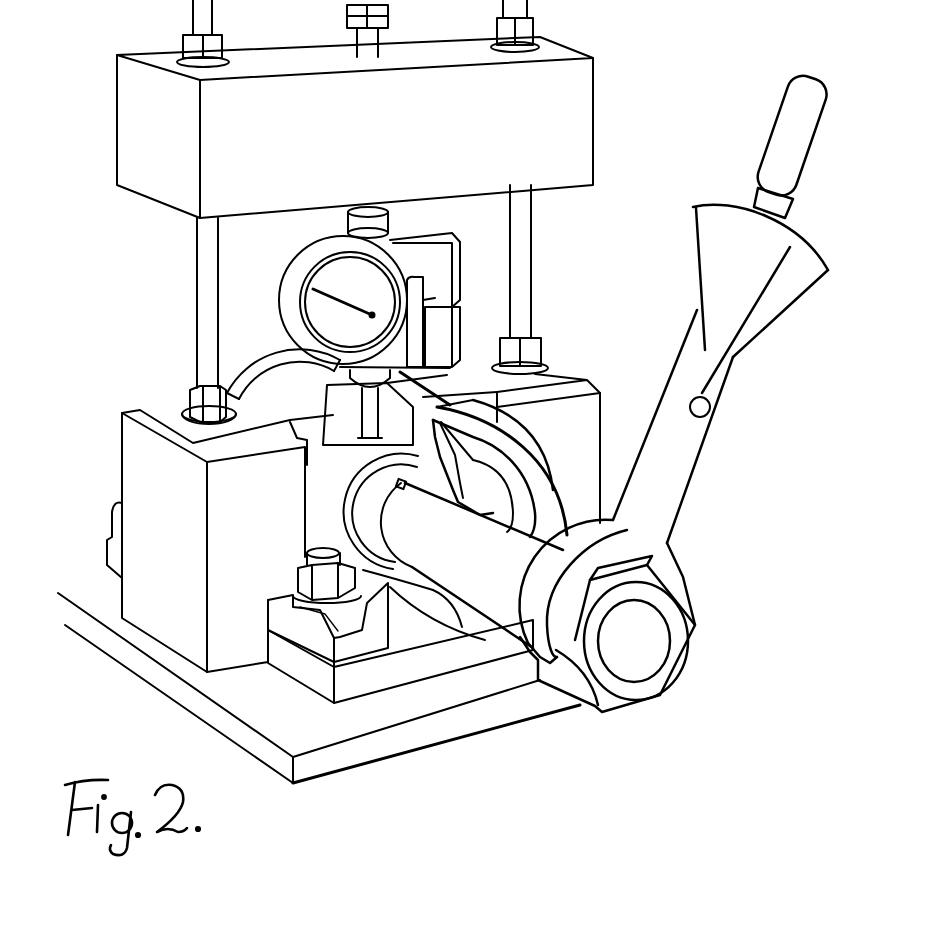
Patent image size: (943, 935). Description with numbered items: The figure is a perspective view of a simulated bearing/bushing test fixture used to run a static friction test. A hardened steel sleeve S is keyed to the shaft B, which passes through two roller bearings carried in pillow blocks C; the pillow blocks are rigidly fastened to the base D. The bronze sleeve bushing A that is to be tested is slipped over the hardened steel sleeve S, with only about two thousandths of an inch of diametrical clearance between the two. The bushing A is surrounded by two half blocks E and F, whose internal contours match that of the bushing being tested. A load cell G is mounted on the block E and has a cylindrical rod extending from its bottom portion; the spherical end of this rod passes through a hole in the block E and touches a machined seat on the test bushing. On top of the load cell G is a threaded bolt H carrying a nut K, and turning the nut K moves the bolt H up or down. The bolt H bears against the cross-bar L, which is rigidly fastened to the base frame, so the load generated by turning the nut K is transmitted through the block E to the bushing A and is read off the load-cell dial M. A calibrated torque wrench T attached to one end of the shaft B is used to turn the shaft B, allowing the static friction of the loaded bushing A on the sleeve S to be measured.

The cross-bar L is at (527, 100).
The nut K is at (345, 232).
The threaded bolt H is at (395, 212).
The load cell G is at (428, 258).
The load-cell dial M is at (312, 312).
The pillow blocks C is at (287, 363).
The half block E is at (393, 410).
The bronze sleeve bushing A is at (340, 472).
The hardened steel sleeve S is at (375, 512).
The half block F is at (330, 546).
The shaft B is at (467, 565).
The calibrated torque wrench T is at (673, 463).
The base D is at (298, 720).